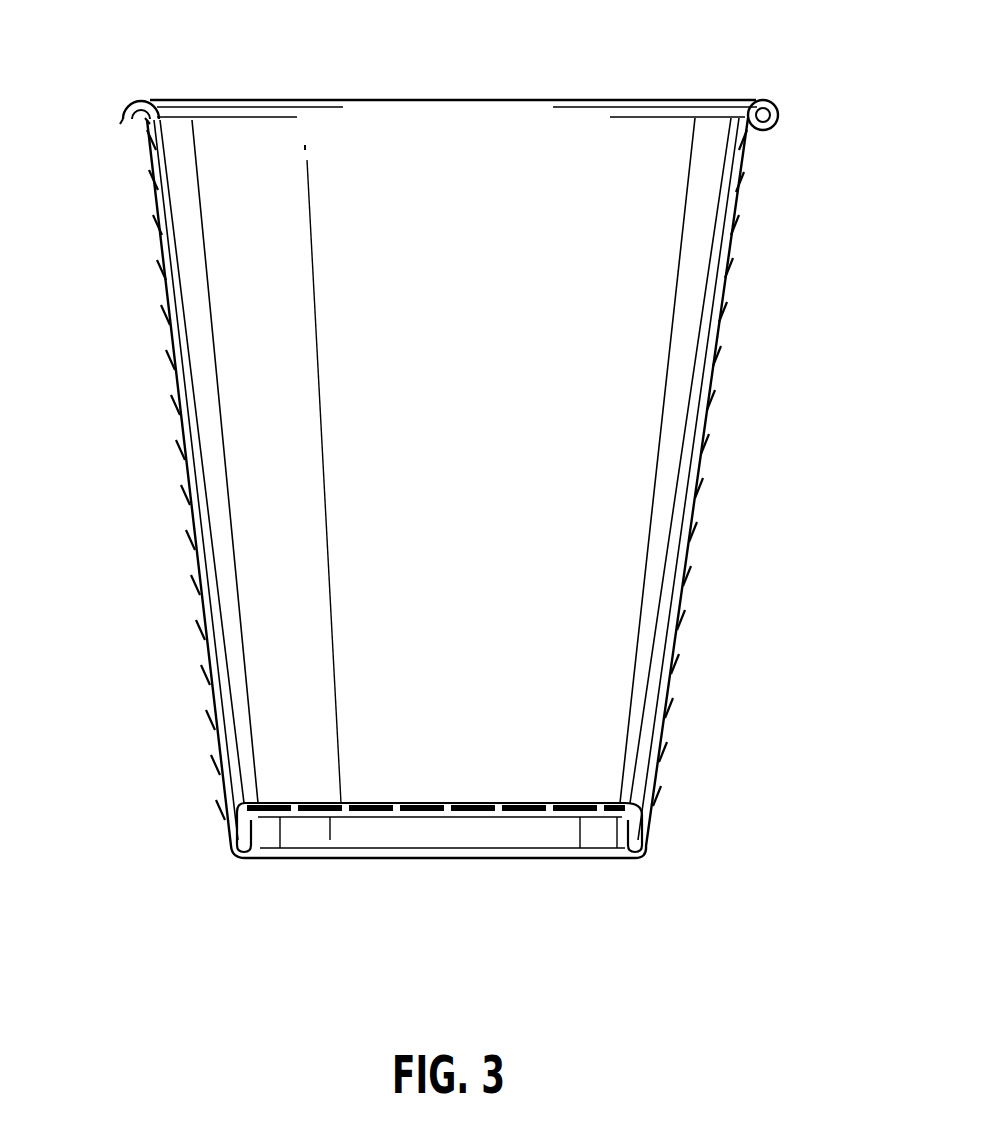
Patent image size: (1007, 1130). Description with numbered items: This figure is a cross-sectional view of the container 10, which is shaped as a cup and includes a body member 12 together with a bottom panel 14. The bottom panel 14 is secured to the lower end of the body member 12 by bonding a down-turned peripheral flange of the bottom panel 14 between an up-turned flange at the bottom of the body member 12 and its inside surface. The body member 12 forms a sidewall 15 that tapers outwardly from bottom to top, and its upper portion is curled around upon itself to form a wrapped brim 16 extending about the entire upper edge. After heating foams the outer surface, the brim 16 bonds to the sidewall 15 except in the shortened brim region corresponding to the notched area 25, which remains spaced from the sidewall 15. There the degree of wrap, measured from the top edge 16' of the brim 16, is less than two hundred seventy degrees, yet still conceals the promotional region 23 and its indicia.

The container 10 is at (479, 475).
The body member 12 is at (673, 653).
The bottom panel 14 is at (521, 815).
The sidewall 15 is at (722, 312).
The brim 16 is at (815, 87).
The top edge of the brim 16' is at (449, 66).
The promotional region 23 is at (141, 122).
The notched area 25 is at (120, 123).